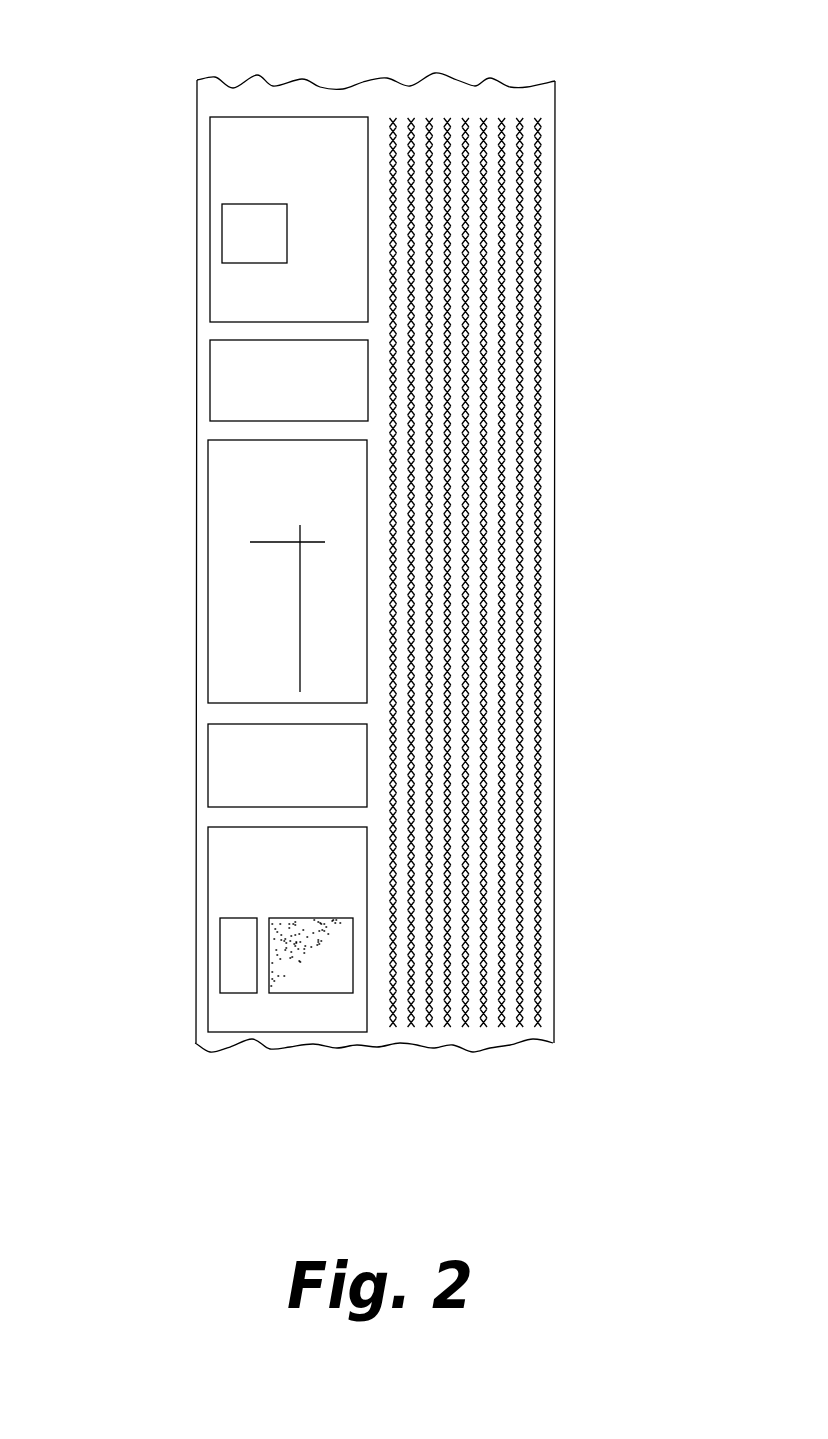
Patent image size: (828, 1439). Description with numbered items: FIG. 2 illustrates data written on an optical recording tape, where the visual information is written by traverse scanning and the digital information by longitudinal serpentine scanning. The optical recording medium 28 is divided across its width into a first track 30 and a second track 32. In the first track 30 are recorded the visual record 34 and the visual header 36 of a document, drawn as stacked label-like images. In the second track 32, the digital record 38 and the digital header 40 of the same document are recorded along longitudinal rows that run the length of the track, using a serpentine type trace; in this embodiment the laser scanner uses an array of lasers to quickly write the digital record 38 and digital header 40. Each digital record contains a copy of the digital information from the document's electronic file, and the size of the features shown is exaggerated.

The optical recording medium 28 is at (375, 610).
The first track 30 is at (212, 516).
The second track 32 is at (534, 513).
The visual record 34 is at (212, 219).
The visual header 36 is at (212, 391).
The digital record 38 is at (609, 572).
The digital header 40 is at (578, 572).